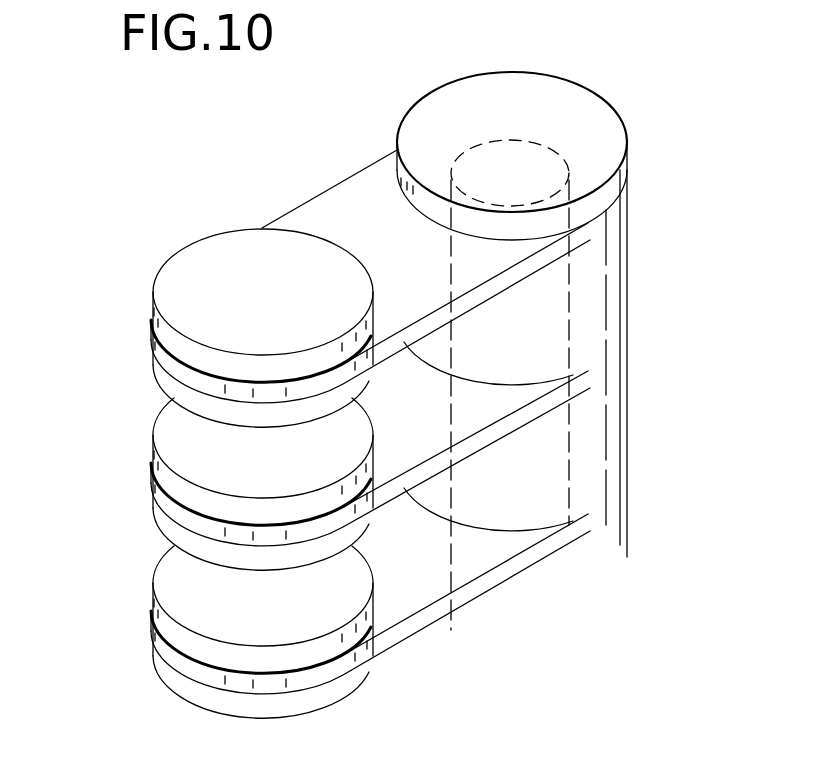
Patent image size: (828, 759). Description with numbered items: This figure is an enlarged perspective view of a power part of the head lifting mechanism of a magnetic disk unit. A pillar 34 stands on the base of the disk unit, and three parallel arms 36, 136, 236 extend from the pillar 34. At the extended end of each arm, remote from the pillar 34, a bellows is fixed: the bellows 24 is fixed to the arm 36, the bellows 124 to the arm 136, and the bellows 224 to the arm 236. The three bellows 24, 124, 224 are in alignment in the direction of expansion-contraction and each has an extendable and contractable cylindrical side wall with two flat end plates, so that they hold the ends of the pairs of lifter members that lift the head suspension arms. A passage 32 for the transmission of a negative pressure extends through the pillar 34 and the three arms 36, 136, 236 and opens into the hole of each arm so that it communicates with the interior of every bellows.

The bellows 24 is at (165, 342).
The bellows 124 is at (167, 485).
The bellows 224 is at (180, 640).
The passage 32 is at (518, 148).
The pillar 34 is at (603, 137).
The arm 36 is at (357, 187).
The arm 136 is at (385, 465).
The arm 236 is at (398, 603).